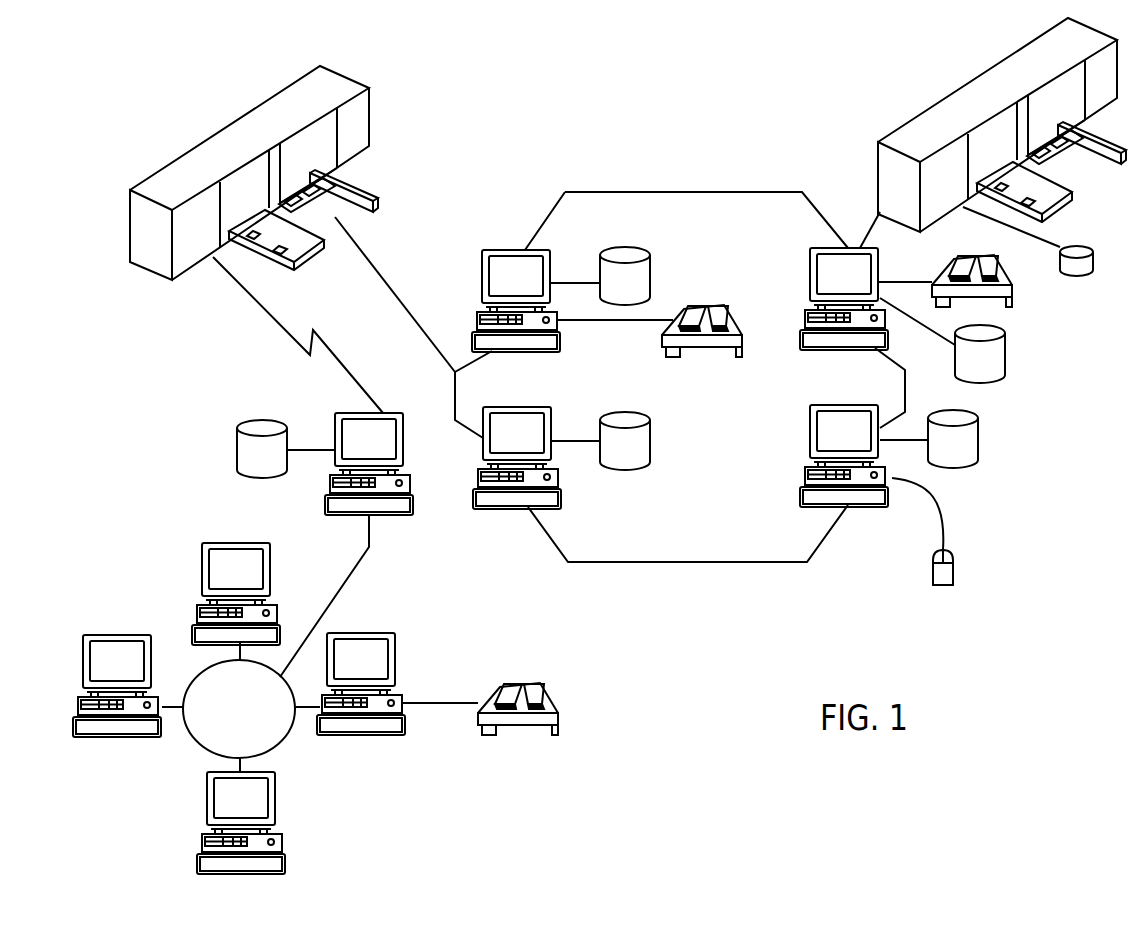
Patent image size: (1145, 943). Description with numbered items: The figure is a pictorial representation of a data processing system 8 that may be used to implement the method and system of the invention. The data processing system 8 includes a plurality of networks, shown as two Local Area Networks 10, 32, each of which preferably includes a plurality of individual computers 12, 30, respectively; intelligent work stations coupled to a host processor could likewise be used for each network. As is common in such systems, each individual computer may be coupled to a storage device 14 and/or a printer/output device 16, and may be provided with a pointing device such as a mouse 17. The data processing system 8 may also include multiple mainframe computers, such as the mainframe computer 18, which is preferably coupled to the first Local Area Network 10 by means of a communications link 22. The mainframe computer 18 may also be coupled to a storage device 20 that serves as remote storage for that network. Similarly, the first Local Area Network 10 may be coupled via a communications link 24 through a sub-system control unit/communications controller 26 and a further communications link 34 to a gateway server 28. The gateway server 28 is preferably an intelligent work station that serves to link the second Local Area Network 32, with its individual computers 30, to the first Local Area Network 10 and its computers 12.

The data processing system 8 is at (745, 180).
The Local Area Network 10 is at (680, 562).
The individual computers 12 is at (500, 248).
The storage device 14 is at (642, 248).
The printer/output device 16 is at (730, 310).
The mouse 17 is at (957, 570).
The mainframe computer 18 is at (960, 92).
The storage device 20 is at (1072, 273).
The communications link 22 is at (872, 232).
The communications link 24 is at (383, 273).
The sub-system control unit/communications controller 26 is at (190, 155).
The gateway server 28 is at (333, 418).
The individual computers 30 is at (202, 563).
The Local Area Network 32 is at (188, 737).
The communications link 34 is at (245, 295).